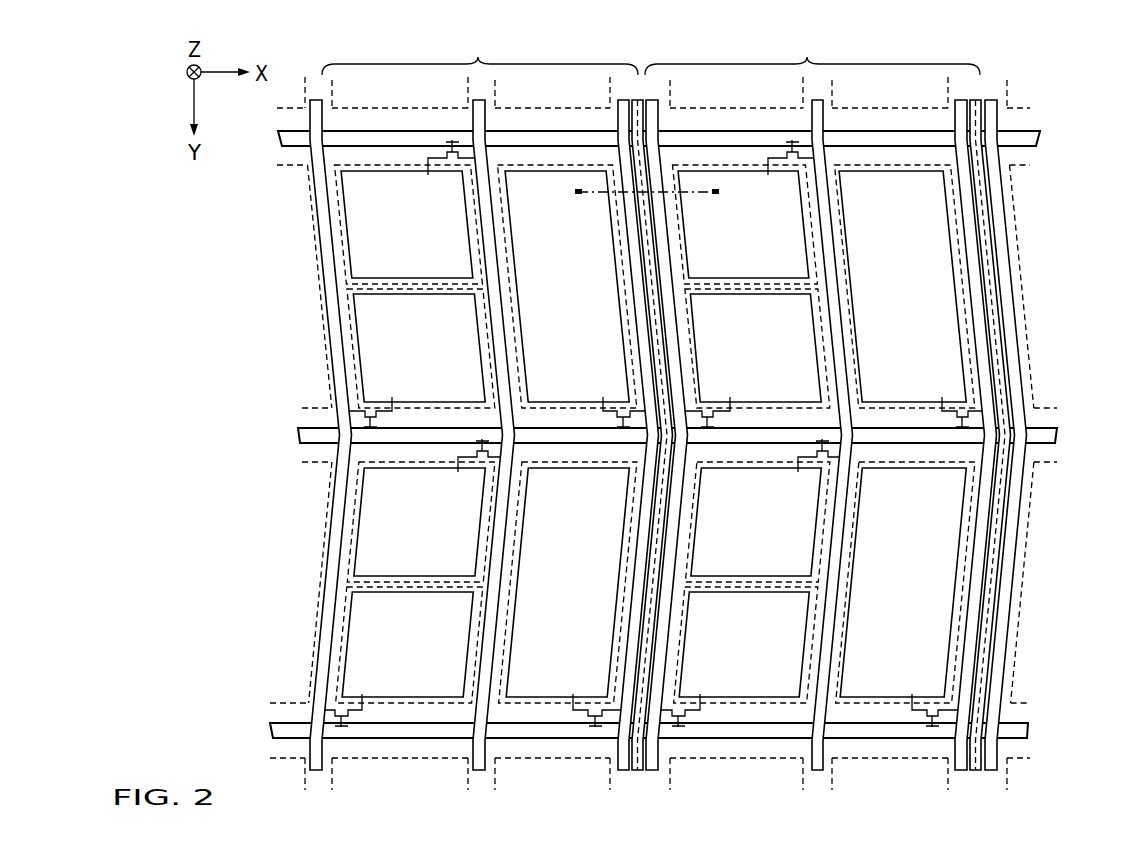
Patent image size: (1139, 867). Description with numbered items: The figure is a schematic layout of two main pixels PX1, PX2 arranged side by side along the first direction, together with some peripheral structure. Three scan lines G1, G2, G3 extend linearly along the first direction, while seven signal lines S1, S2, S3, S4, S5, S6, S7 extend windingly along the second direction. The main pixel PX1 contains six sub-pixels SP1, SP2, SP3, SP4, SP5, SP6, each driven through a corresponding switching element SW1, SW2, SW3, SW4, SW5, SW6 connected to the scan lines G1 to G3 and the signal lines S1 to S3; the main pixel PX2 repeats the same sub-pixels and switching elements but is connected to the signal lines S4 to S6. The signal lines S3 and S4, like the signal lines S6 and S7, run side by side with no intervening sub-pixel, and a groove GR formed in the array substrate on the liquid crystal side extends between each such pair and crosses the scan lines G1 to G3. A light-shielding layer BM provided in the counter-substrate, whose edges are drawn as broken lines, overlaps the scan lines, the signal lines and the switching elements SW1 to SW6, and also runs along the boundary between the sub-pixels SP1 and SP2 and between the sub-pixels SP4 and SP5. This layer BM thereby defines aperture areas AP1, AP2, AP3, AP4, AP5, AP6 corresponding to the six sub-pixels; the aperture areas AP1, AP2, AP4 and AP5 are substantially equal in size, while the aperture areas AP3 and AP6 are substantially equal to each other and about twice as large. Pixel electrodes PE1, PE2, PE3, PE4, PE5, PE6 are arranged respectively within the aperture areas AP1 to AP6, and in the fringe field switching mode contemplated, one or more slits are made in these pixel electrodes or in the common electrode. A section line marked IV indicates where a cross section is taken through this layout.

The scan line G1 is at (285, 147).
The scan line G2 is at (303, 444).
The scan line G3 is at (275, 739).
The signal line S1 is at (318, 120).
The signal line S2 is at (481, 120).
The signal line S3 is at (615, 120).
The signal line S4 is at (659, 121).
The signal line S5 is at (821, 120).
The signal line S6 is at (954, 118).
The signal line S7 is at (997, 118).
The groove GR is at (636, 237).
The sub-pixel SP1 is at (396, 140).
The sub-pixel SP2 is at (334, 312).
The sub-pixel SP3 is at (545, 140).
The sub-pixel SP4 is at (413, 437).
The sub-pixel SP5 is at (435, 728).
The sub-pixel SP6 is at (542, 728).
The switching element SW1 is at (440, 157).
The switching element SW2 is at (352, 412).
The switching element SW3 is at (612, 427).
The switching element SW4 is at (466, 449).
The switching element SW5 is at (350, 718).
The switching element SW6 is at (592, 718).
The pixel electrode PE1 is at (356, 258).
The pixel electrode PE2 is at (368, 358).
The pixel electrode PE3 is at (520, 252).
The pixel electrode PE4 is at (362, 540).
The pixel electrode PE5 is at (352, 648).
The pixel electrode PE6 is at (575, 478).
The aperture area AP1 is at (338, 228).
The aperture area AP2 is at (350, 335).
The aperture area AP3 is at (500, 212).
The aperture area AP4 is at (352, 512).
The aperture area AP5 is at (343, 606).
The aperture area AP6 is at (544, 460).
The main pixel PX1 is at (480, 52).
The main pixel PX2 is at (812, 52).
The light-shielding layer BM is at (1012, 198).
The section line IV- IV is at (646, 189).